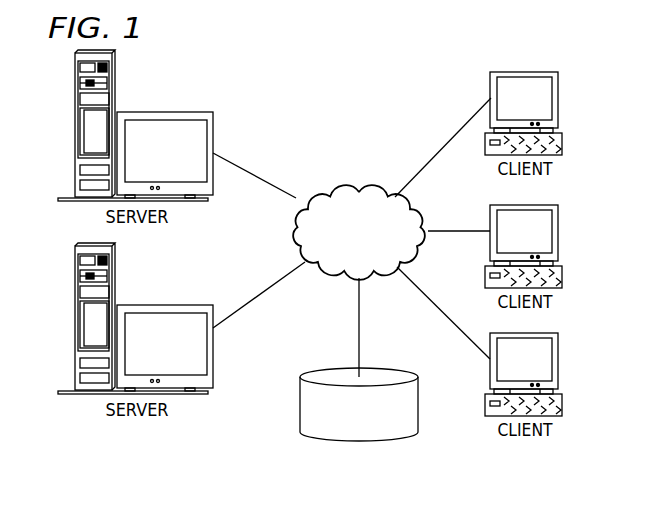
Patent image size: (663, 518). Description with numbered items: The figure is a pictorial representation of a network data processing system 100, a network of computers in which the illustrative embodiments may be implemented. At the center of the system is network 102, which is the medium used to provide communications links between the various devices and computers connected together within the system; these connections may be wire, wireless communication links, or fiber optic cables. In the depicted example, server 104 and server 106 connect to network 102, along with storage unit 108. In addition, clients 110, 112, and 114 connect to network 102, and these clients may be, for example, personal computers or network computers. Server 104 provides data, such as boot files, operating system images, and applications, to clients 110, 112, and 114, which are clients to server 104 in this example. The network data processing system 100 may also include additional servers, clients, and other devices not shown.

The network data processing system 100 is at (409, 78).
The network 102 is at (333, 190).
The server 104 is at (75, 127).
The server 106 is at (73, 318).
The storage unit 108 is at (343, 445).
The client 110 is at (560, 99).
The client 112 is at (560, 231).
The client 114 is at (560, 362).